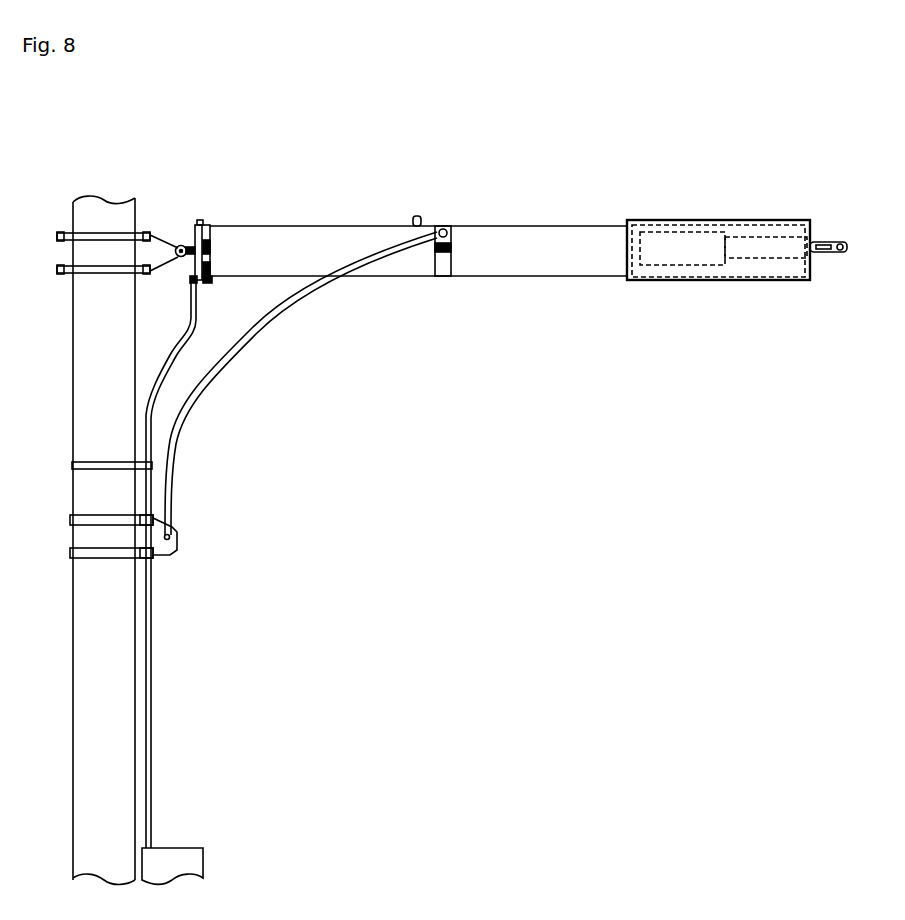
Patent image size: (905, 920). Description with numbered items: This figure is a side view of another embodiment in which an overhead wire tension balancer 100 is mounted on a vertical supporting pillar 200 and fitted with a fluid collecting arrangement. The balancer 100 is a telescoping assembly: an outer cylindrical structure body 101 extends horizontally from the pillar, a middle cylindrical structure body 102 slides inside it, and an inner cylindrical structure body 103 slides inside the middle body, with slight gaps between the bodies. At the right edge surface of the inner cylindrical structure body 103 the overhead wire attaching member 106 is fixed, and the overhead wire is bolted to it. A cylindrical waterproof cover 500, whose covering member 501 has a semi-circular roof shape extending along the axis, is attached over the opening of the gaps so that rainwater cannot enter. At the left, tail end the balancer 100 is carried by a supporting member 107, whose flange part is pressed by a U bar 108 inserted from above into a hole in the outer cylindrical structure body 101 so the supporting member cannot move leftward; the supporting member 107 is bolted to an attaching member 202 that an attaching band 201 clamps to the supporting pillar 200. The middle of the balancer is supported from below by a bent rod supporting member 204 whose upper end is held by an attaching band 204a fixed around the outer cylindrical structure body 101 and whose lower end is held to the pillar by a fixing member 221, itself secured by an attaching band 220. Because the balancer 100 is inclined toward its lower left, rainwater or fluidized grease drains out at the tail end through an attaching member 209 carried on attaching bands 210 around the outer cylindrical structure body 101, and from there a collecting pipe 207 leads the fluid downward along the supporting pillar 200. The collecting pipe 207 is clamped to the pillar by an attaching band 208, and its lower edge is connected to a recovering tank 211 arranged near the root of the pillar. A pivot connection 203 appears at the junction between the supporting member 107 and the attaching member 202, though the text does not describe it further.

The overhead wire tension balancer 100 is at (305, 226).
The outer cylindrical structure body 101 is at (533, 258).
The middle cylindrical structure body 102 is at (692, 258).
The inner cylindrical structure body 103 is at (760, 252).
The overhead wire attaching member 106 is at (820, 241).
The supporting member 107 is at (180, 246).
The U bar 108 is at (199, 224).
The supporting pillar 200 is at (95, 318).
The attaching band 201 is at (85, 238).
The attaching member 202 is at (155, 260).
The pivot pin 203 is at (178, 247).
The supporting member 204 is at (208, 386).
The attaching band 204a is at (442, 268).
The collecting pipe 207 is at (150, 424).
The attaching band 208 is at (82, 462).
The attaching member 209 is at (203, 287).
The attaching bands 210 is at (211, 256).
The recovering tank 211 is at (193, 868).
The attaching band 220 is at (85, 521).
The fixing member 221 is at (158, 545).
The waterproof cover 500 is at (647, 219).
The covering member 501 is at (742, 219).